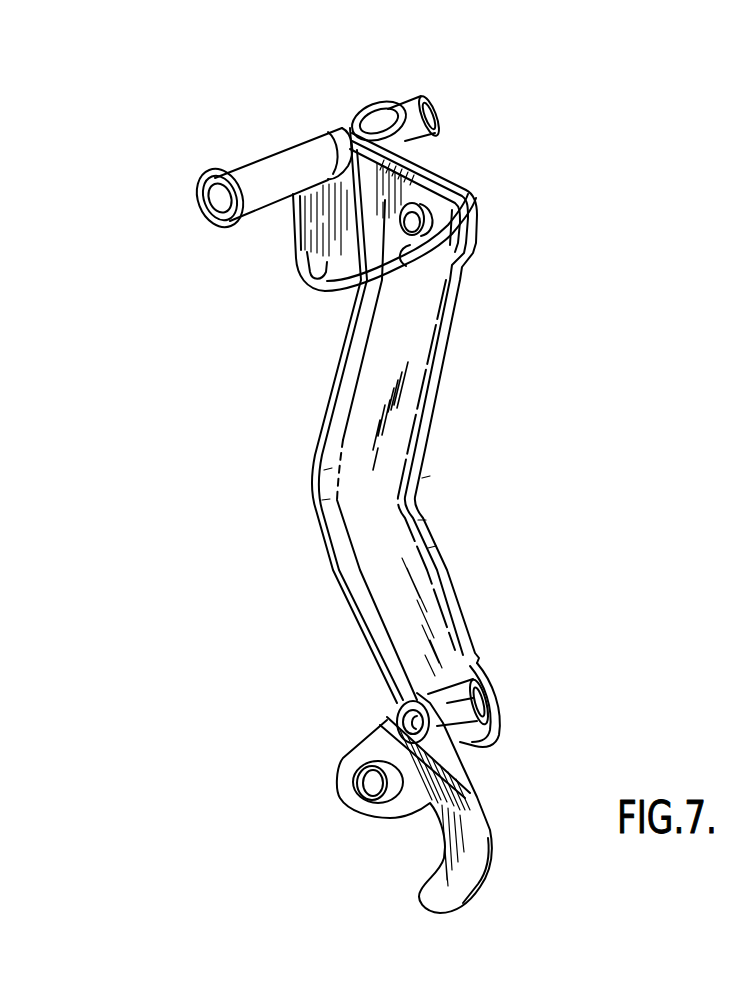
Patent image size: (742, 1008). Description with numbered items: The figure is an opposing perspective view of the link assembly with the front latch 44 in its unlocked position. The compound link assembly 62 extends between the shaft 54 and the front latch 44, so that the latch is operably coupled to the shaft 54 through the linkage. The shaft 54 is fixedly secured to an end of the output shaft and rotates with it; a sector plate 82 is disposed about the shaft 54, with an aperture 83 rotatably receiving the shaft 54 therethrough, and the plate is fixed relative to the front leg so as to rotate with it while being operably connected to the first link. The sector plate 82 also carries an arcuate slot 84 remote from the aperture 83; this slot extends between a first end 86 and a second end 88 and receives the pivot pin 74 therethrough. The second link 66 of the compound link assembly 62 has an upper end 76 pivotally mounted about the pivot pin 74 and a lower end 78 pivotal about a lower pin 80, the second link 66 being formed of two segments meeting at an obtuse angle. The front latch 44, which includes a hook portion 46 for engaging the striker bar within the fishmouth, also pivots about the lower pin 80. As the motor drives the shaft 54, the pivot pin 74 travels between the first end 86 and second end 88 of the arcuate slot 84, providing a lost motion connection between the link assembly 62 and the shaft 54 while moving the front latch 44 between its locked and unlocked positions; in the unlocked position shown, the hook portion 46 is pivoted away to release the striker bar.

The front latch 44 is at (490, 797).
The hook portion 46 is at (465, 904).
The shaft 54 is at (277, 152).
The compound link assembly 62 is at (450, 392).
The second link 66 is at (390, 497).
The pivot pin 74 is at (408, 214).
The upper end 76 is at (475, 252).
The lower end 78 is at (478, 745).
The lower pin 80 is at (397, 712).
The sector plate 82 is at (288, 215).
The aperture 83 is at (356, 125).
The arcuate slot 84 is at (408, 268).
The first end 86 is at (318, 292).
The second end 88 is at (468, 265).